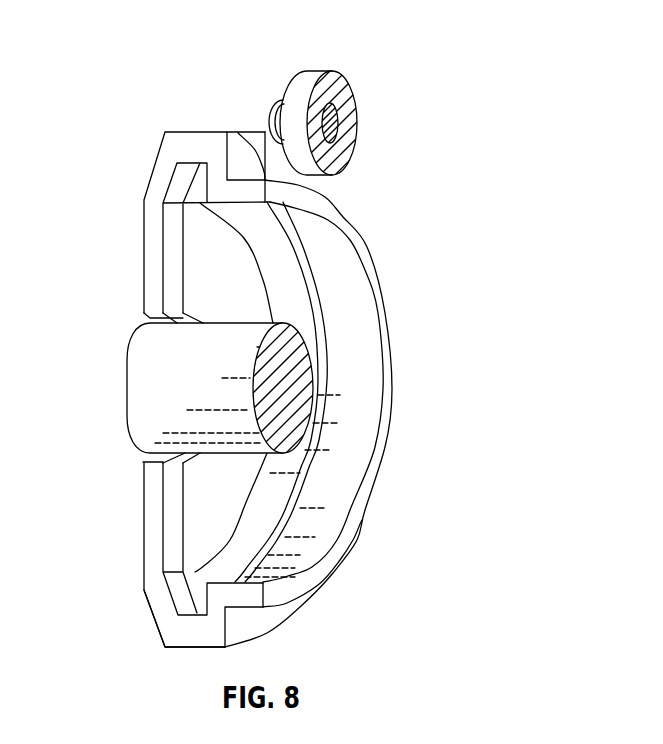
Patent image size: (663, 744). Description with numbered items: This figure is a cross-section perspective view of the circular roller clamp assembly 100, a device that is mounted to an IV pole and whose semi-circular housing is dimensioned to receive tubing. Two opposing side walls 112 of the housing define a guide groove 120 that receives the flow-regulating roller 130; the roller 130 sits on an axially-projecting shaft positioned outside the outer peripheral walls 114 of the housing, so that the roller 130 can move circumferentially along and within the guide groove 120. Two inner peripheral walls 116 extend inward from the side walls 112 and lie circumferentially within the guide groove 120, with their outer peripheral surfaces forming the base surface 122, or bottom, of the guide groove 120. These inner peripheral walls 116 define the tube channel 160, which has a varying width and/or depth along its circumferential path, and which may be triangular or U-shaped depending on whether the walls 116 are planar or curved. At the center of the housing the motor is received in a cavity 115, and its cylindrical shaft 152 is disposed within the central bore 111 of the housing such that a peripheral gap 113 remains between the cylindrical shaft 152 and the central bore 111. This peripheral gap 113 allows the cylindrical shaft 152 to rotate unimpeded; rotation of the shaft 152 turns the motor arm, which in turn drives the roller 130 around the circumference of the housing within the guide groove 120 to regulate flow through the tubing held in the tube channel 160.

The circular roller clamp assembly 100 is at (379, 29).
The central bore 111 is at (153, 317).
The side walls 112 is at (265, 627).
The peripheral gap 113 is at (157, 458).
The outer peripheral walls 114 is at (185, 648).
The cavity 115 is at (270, 473).
The inner peripheral walls 116 is at (318, 572).
The guide groove 120 is at (245, 133).
The base surface 122 is at (248, 151).
The flow-regulating roller 130 is at (320, 72).
The cylindrical shaft 152 is at (293, 410).
The tube channel 160 is at (369, 266).